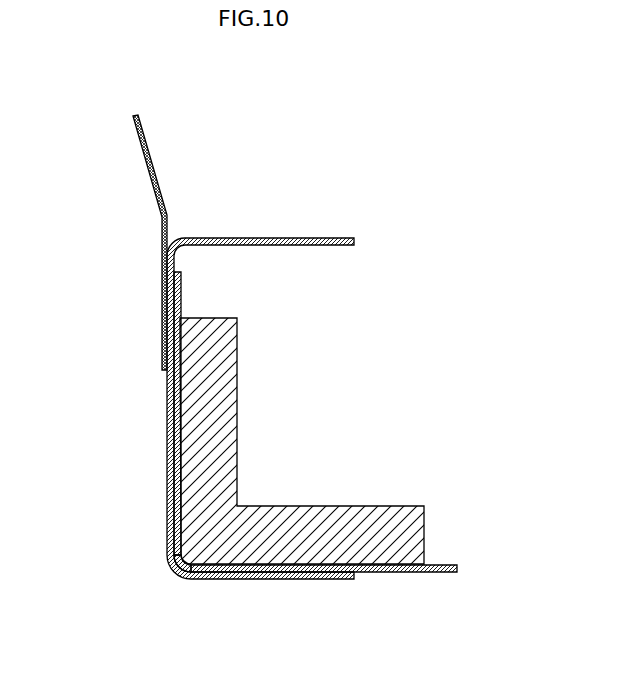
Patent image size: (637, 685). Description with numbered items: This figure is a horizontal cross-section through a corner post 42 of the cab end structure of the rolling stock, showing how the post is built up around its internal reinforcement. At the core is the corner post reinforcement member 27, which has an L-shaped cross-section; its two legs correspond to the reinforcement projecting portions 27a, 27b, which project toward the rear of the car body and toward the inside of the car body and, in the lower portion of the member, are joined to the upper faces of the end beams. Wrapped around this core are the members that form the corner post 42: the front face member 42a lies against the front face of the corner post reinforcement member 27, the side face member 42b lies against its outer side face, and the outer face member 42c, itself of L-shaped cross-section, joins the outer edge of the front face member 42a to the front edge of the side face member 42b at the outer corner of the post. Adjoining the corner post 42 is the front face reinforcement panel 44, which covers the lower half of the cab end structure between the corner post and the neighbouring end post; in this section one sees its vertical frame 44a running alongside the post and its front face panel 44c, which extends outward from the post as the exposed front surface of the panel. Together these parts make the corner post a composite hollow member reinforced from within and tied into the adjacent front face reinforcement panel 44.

The corner post reinforcement member 27 is at (307, 439).
The reinforcement projecting portion 27a is at (404, 522).
The reinforcement projecting portion 27b is at (225, 338).
The corner post 42 is at (272, 453).
The front face member 42a is at (182, 297).
The side face member 42b is at (390, 574).
The outer face member 42c is at (168, 567).
The front face reinforcement panel 44 is at (208, 347).
The vertical frame 44a is at (273, 238).
The front face panel 44c is at (157, 181).